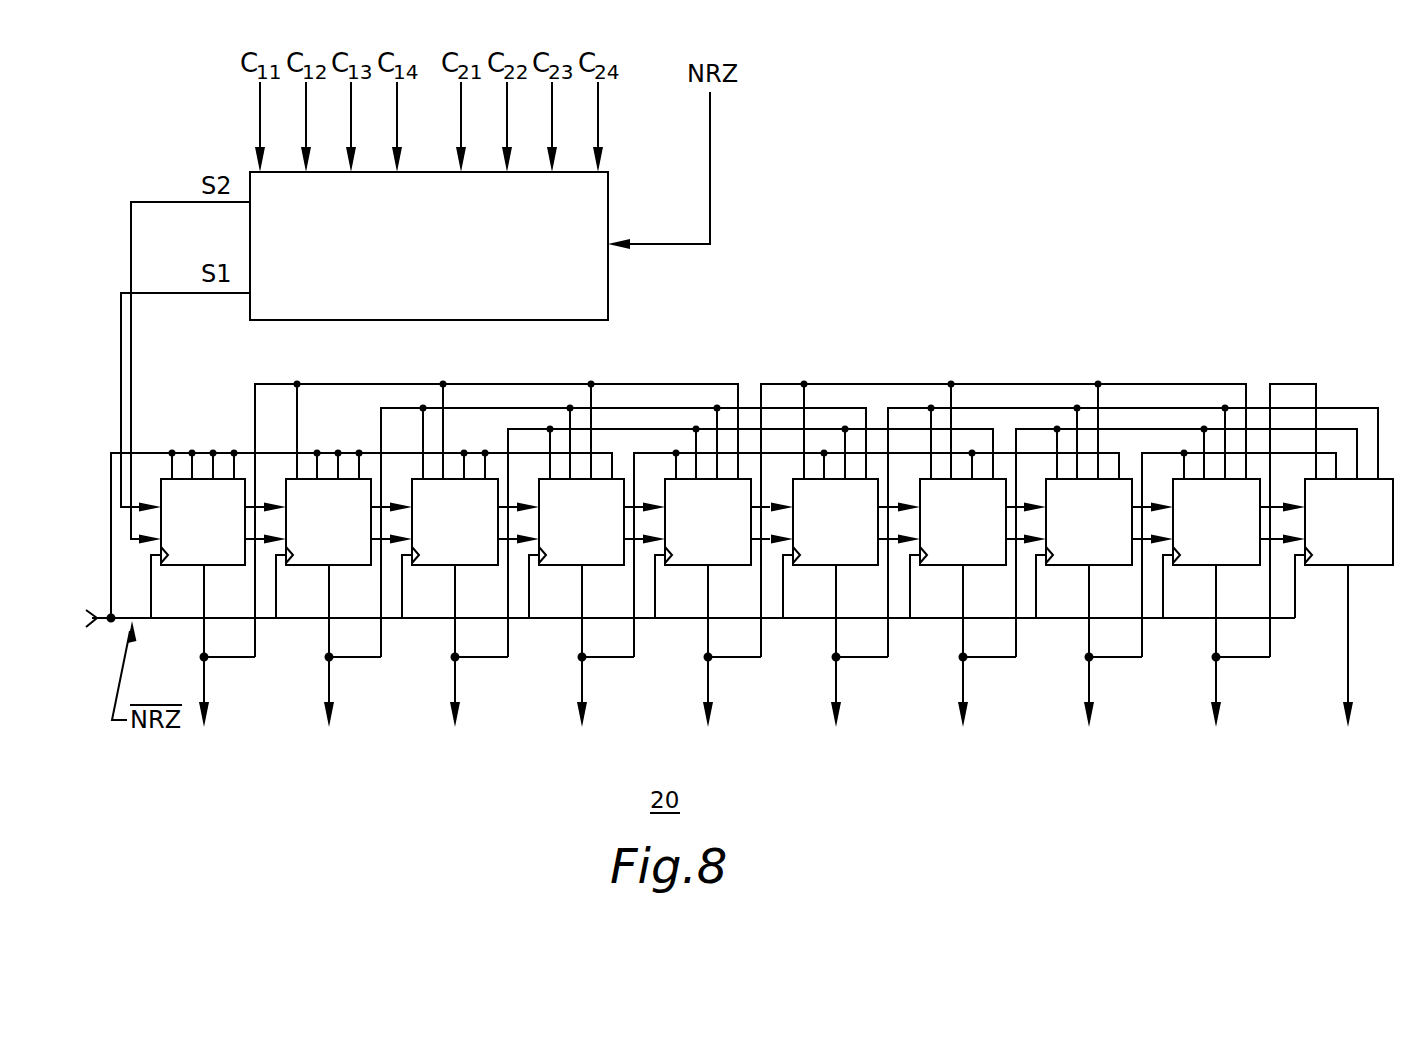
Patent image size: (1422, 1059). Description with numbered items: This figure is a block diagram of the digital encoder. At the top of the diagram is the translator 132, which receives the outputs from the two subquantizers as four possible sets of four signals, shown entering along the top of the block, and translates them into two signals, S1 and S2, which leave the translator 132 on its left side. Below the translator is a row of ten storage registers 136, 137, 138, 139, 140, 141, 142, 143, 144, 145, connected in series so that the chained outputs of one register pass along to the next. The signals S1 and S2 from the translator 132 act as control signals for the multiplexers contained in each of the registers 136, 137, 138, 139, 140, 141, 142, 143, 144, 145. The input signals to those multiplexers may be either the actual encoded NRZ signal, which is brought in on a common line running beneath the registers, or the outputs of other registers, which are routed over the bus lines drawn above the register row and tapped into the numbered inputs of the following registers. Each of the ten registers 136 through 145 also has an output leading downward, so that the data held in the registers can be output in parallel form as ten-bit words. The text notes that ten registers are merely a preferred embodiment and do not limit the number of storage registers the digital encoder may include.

The translator 132 is at (608, 278).
The storage register 136 is at (161, 478).
The storage register 137 is at (286, 478).
The storage register 138 is at (412, 478).
The storage register 139 is at (539, 478).
The storage register 140 is at (737, 565).
The storage register 141 is at (864, 565).
The storage register 142 is at (992, 565).
The storage register 143 is at (1118, 565).
The storage register 144 is at (1246, 565).
The storage register 145 is at (1325, 565).